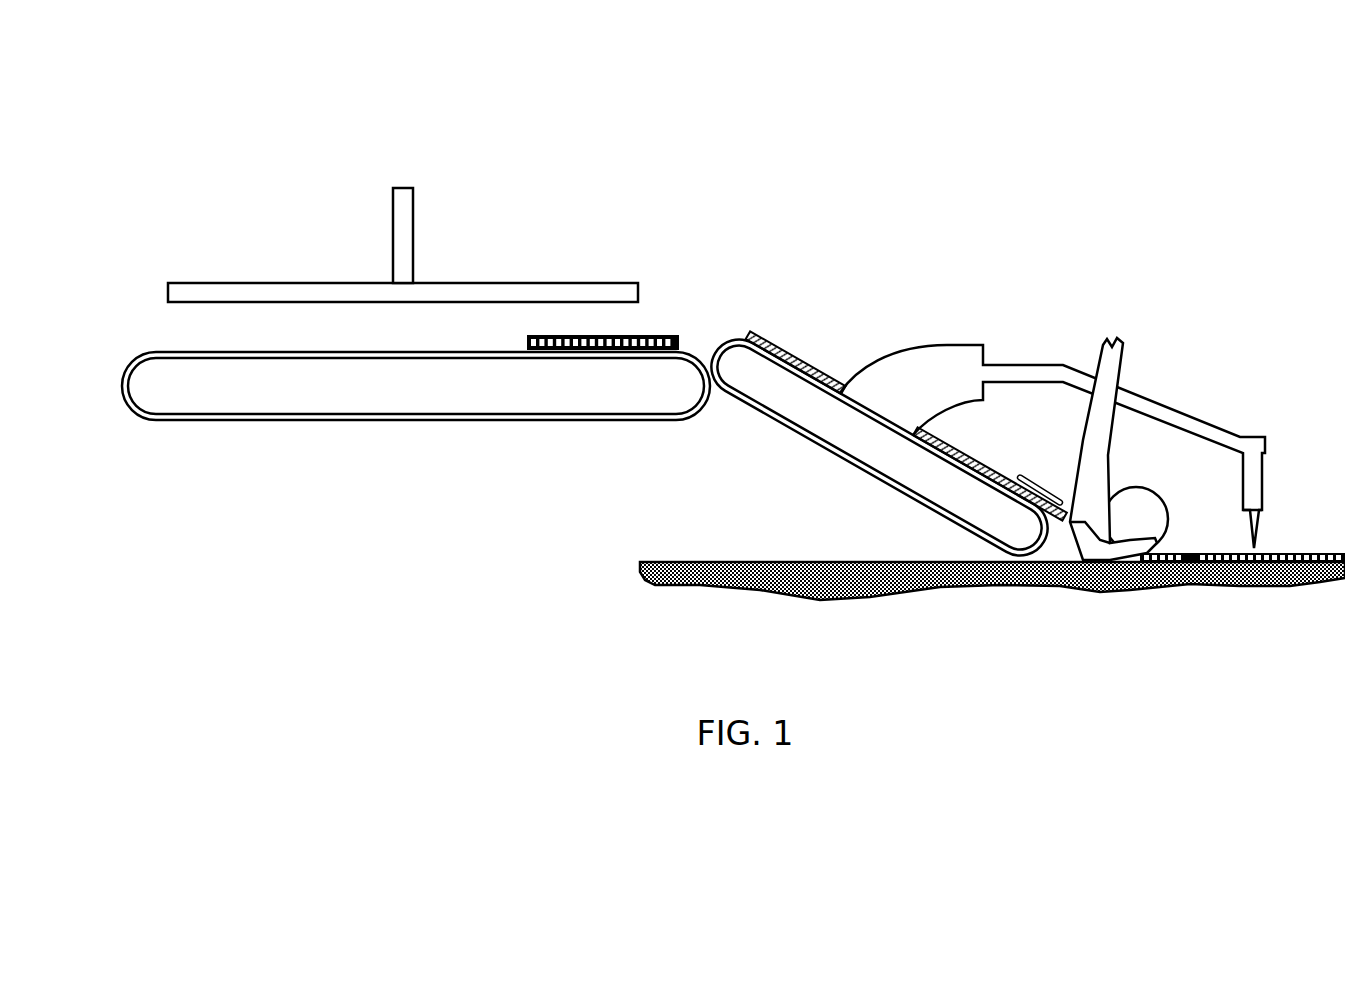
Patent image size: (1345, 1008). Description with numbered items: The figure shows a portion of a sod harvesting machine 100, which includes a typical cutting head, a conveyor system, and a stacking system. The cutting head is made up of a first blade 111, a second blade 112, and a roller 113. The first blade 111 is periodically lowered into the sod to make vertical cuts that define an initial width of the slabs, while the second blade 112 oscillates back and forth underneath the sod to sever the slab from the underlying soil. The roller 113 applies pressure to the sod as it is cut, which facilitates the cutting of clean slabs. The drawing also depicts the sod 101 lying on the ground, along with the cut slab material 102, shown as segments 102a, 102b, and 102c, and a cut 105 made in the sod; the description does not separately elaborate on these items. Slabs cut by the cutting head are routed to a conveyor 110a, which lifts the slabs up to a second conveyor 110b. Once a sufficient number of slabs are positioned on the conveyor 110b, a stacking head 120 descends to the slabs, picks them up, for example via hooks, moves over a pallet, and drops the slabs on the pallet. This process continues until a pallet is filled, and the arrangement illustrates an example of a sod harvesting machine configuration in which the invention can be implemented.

The sod harvesting machine 100 is at (729, 88).
The substrate 101 is at (640, 570).
The tape applied to substrate 102 is at (1295, 585).
The tape segment on second conveyor 102a is at (679, 335).
The tape segment on first conveyor 102b is at (767, 345).
The tape segment at application point 102c is at (947, 450).
The tape cut 105 is at (1181, 553).
The conveyor 110a is at (778, 418).
The conveyor 110b is at (277, 420).
The first blade 111 is at (1260, 535).
The second blade 112 is at (1076, 585).
The roller 113 is at (1162, 494).
The stacking head 120 is at (393, 227).